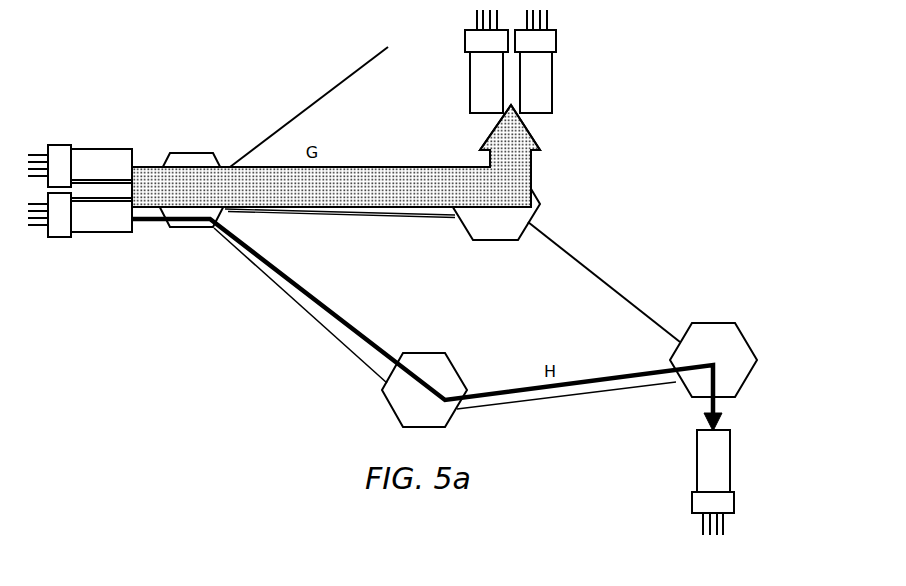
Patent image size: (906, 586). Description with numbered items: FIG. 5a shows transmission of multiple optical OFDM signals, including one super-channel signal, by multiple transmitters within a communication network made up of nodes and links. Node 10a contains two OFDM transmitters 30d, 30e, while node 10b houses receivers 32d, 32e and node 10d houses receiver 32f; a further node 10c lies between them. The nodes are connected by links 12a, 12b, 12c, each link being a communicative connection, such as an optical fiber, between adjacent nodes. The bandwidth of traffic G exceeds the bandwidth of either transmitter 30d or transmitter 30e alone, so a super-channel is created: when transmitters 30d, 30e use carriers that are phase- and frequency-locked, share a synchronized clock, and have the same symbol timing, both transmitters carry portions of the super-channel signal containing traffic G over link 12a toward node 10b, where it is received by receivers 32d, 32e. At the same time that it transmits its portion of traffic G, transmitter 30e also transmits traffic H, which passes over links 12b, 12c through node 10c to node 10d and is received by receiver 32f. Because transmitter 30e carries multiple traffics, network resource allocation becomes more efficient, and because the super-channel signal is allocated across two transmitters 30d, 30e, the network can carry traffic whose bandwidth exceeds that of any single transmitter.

The node 10a is at (191, 152).
The node 10b is at (496, 241).
The node 10c is at (391, 410).
The node 10d is at (713, 322).
The link 12a is at (365, 216).
The link 12b is at (333, 336).
The link 12c is at (543, 398).
The OFDM transmitter 30d is at (94, 148).
The OFDM transmitter 30e is at (94, 233).
The receiver 32d is at (470, 80).
The receiver 32e is at (552, 80).
The receiver 32f is at (730, 458).